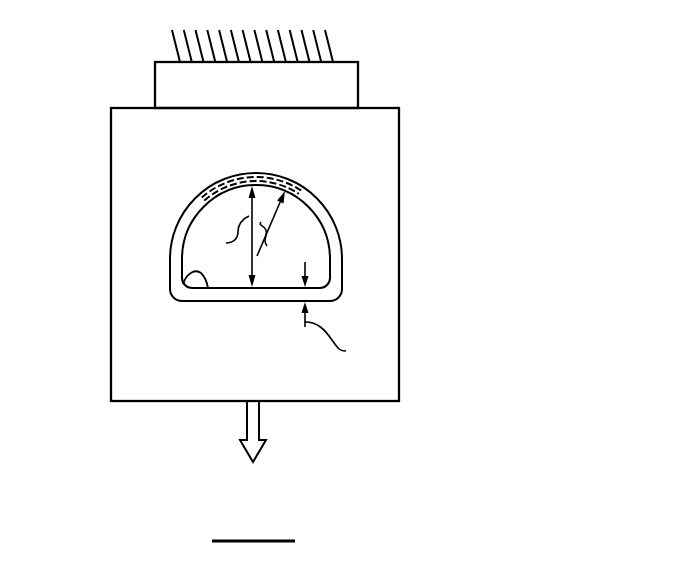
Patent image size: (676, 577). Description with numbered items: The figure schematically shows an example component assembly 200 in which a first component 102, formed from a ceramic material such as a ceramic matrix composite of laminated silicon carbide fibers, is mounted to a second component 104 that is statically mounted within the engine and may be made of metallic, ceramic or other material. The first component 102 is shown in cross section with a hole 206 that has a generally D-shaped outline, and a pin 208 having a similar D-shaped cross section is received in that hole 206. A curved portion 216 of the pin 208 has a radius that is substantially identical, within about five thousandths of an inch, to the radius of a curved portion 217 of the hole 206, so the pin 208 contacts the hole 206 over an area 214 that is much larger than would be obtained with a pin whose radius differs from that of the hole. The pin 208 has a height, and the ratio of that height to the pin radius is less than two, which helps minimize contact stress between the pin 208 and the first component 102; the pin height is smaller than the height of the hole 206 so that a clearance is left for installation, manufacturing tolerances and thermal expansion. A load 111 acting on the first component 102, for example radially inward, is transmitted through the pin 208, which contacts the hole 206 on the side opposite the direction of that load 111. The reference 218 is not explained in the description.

The component assembly 200 is at (514, 63).
The first component 102 is at (387, 128).
The second component 104 is at (347, 85).
The load 111 is at (261, 451).
The hole 206 is at (262, 219).
The pin 208 is at (262, 228).
The area 214 is at (288, 181).
The portion of the pin 216 is at (236, 187).
The portion of the hole 217 is at (229, 183).
The protrusion 218 is at (188, 276).